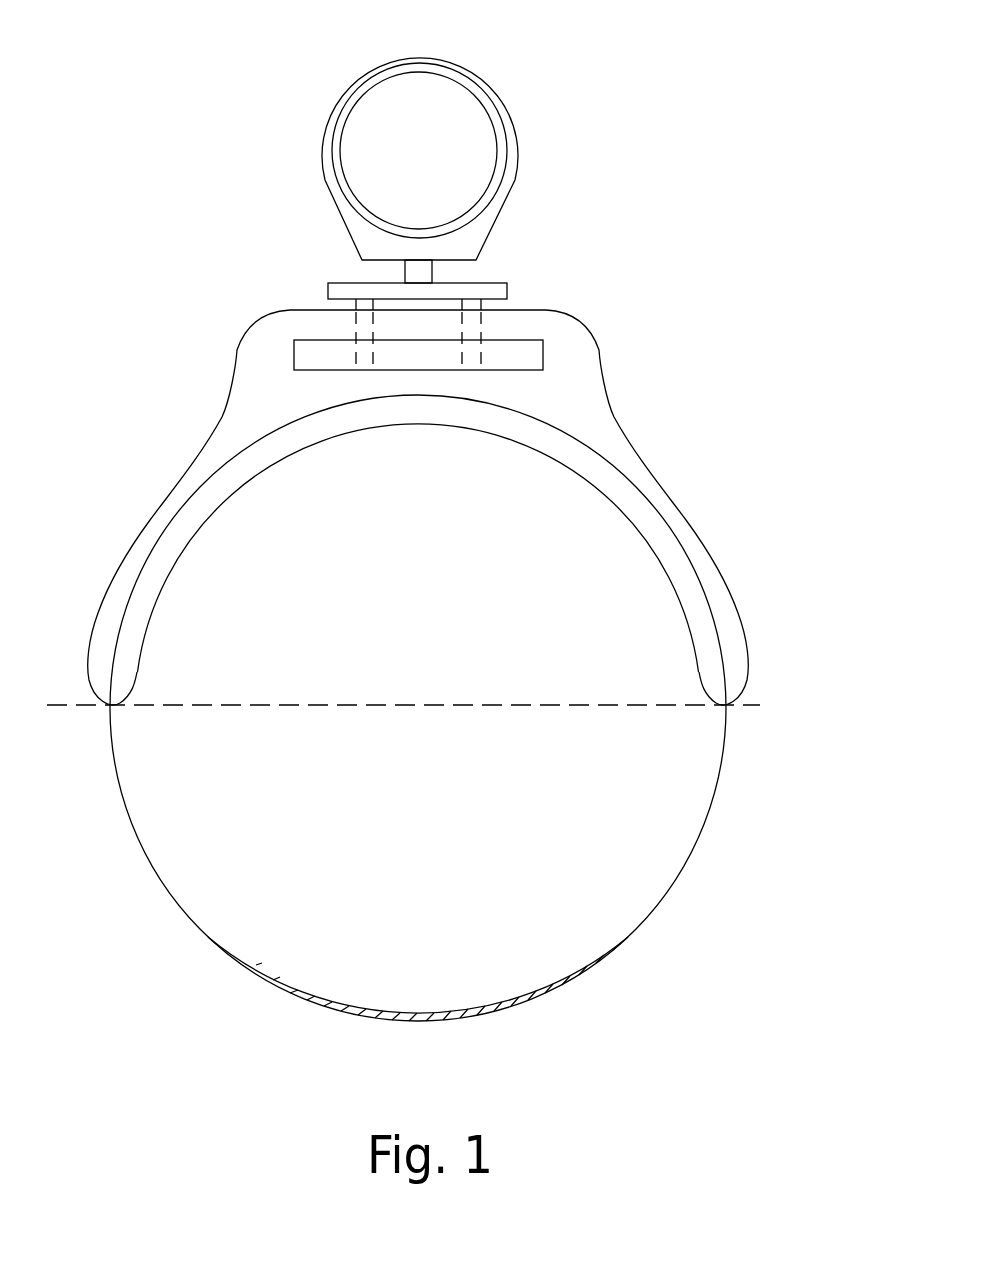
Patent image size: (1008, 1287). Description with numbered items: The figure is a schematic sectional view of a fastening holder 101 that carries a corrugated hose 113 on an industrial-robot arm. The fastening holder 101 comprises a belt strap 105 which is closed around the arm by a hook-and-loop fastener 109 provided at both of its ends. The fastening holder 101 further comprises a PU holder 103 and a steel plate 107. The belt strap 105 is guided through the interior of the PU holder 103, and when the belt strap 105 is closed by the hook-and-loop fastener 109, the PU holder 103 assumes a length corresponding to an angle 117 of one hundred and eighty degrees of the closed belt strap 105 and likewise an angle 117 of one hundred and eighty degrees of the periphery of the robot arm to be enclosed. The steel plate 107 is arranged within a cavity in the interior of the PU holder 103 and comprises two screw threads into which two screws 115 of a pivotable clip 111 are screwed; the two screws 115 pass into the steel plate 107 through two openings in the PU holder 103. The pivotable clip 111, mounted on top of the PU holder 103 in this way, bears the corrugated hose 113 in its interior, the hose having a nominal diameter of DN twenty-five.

The fastening holder 101 is at (155, 150).
The PU holder 103 is at (593, 430).
The belt strap 105 is at (700, 578).
The steel plate 107 is at (528, 353).
The hook-and-loop fastener 109 is at (537, 997).
The pivotable clip 111 is at (481, 226).
The corrugated hose 113 is at (499, 146).
The screws 115 is at (367, 332).
The angle 117 is at (460, 690).